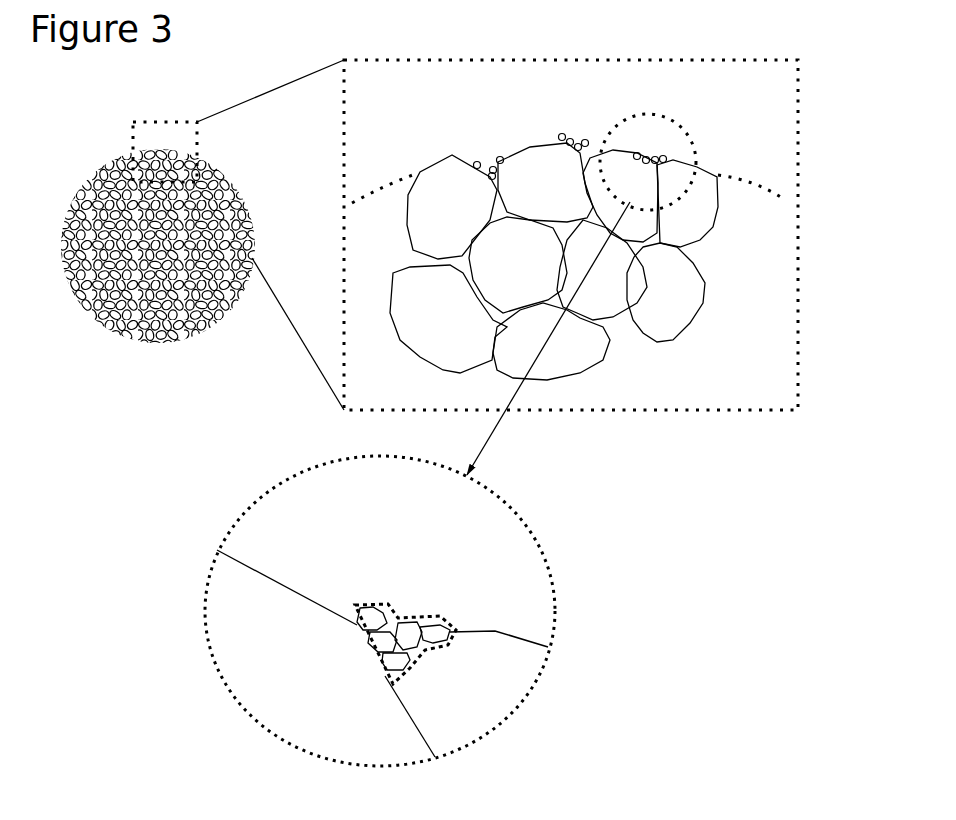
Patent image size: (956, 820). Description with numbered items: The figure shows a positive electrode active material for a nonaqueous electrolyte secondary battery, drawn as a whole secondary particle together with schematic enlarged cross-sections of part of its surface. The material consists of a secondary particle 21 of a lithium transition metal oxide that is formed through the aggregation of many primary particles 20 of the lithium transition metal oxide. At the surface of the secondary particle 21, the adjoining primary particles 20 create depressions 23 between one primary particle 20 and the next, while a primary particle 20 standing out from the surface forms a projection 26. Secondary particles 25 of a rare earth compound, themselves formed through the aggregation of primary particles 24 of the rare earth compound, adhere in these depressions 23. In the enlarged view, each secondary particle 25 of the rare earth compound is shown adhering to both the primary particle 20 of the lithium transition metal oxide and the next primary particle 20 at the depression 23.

The primary particle of a lithium transition metal oxide 20 is at (170, 150).
The secondary particle of a lithium transition metal oxide 21 is at (71, 127).
The depression 23 is at (486, 150).
The primary particle of a rare earth compound 24 is at (453, 627).
The secondary particle of a rare earth compound 25 is at (403, 615).
The projection 26 is at (525, 138).